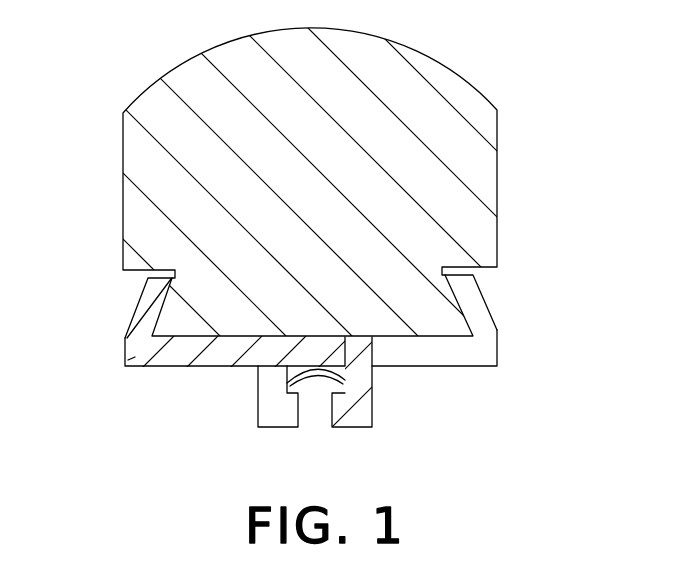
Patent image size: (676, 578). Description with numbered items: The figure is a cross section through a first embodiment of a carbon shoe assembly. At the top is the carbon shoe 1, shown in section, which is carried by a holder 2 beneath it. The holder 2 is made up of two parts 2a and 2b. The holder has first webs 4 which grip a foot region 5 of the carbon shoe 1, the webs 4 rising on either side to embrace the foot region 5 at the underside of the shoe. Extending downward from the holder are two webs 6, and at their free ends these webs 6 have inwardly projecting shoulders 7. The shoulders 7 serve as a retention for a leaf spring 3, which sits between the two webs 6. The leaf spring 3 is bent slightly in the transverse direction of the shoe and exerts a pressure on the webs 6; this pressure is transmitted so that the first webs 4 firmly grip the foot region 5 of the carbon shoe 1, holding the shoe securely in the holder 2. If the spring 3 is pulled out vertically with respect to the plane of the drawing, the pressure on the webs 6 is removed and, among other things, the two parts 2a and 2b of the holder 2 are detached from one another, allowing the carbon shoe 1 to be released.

The carbon shoe 1 is at (452, 157).
The holder 2 is at (325, 379).
The part of the holder 2a is at (498, 350).
The part of the holder 2b is at (125, 368).
The leaf spring 3 is at (318, 373).
The first webs 4 is at (132, 313).
The foot region 5 is at (273, 311).
The webs 6 is at (258, 427).
The shoulders 7 is at (303, 427).